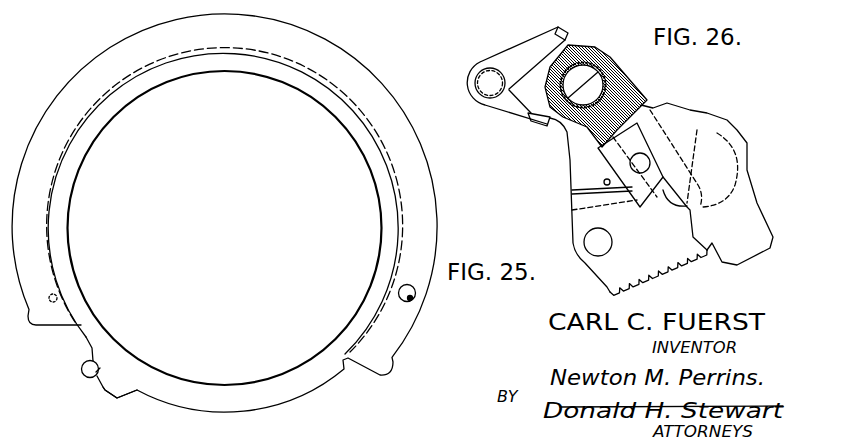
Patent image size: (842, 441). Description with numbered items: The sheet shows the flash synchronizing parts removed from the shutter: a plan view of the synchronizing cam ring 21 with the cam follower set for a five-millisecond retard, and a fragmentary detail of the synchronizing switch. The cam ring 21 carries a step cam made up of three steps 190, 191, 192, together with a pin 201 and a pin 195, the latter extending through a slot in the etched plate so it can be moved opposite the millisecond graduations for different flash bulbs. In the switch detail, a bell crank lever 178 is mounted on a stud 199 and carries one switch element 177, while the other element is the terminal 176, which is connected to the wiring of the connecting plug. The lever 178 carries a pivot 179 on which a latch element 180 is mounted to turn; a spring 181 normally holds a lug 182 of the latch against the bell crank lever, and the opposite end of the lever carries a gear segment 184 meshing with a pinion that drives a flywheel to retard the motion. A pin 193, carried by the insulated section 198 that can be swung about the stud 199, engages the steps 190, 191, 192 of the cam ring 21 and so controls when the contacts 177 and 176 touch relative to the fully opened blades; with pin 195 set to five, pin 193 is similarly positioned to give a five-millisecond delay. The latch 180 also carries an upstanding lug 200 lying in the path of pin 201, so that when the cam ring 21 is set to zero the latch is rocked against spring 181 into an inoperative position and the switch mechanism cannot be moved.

In FIG. 25, the cam ring 21 is at (75, 178).
In FIG. 26, the cam ring 21 is at (743, 192).
In FIG. 26, the terminal 176 is at (737, 128).
In FIG. 26, the switch element 177 is at (592, 252).
In FIG. 26, the bell crank lever 178 is at (582, 190).
In FIG. 26, the pivot 179 is at (483, 87).
In FIG. 26, the latch element 180 is at (508, 57).
In FIG. 26, the spring 181 is at (520, 112).
In FIG. 26, the lug 182 is at (537, 125).
In FIG. 26, the gear segment 184 is at (640, 284).
In FIG. 25, the cam step 190 is at (86, 344).
In FIG. 26, the cam step 190 is at (641, 158).
In FIG. 25, the cam step 191 is at (98, 370).
In FIG. 26, the cam step 191 is at (673, 206).
In FIG. 25, the cam step 192 is at (105, 390).
In FIG. 26, the cam step 192 is at (722, 262).
In FIG. 25, the pin 193 is at (82, 373).
In FIG. 26, the pin 193 is at (630, 162).
In FIG. 25, the pin 195 is at (413, 300).
In FIG. 26, the insulated section 198 is at (632, 88).
In FIG. 26, the stud 199 is at (606, 80).
In FIG. 26, the upstanding lug 200 is at (572, 33).
In FIG. 25, the pin 201 is at (58, 299).